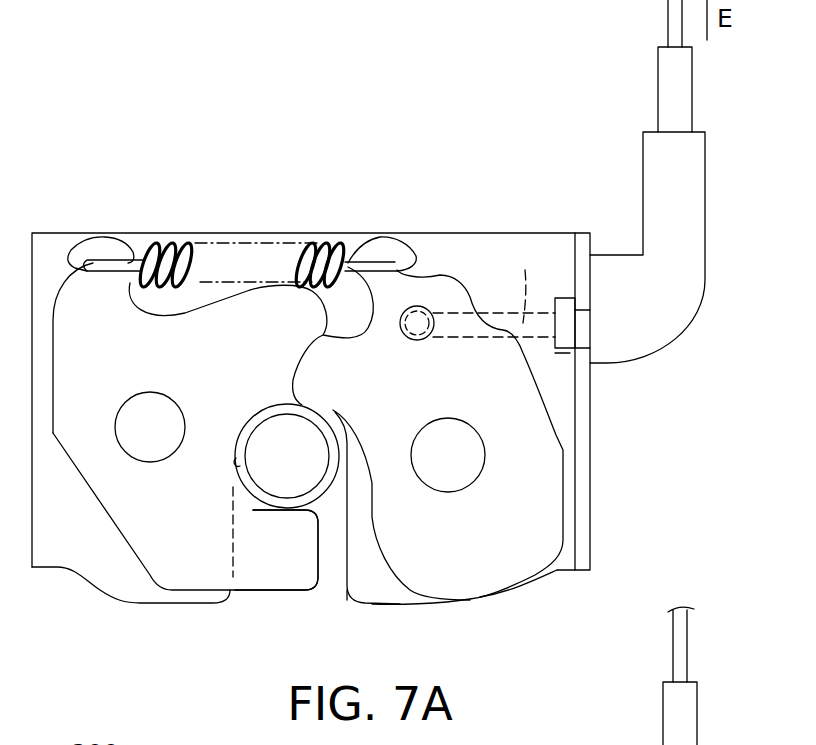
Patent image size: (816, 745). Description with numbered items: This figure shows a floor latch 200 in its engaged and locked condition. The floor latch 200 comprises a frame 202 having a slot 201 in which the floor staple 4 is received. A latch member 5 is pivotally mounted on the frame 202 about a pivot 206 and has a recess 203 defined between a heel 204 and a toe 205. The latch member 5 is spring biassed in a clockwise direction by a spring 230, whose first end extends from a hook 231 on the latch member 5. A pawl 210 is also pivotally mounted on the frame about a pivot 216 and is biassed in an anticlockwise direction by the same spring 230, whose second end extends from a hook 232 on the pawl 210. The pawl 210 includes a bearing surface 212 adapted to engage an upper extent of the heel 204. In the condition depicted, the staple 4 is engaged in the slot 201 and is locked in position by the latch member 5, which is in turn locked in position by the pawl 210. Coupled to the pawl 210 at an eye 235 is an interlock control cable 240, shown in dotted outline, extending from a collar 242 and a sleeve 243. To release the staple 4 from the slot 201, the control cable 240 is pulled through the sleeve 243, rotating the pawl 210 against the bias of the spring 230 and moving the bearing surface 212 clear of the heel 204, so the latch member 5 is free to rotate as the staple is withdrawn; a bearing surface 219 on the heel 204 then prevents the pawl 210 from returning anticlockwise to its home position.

The floor latch 200 is at (116, 132).
The slot 201 is at (333, 588).
The frame 202 is at (477, 231).
The recess 203 is at (235, 468).
The heel 204 is at (238, 389).
The toe 205 is at (306, 562).
The pivot 206 is at (148, 418).
The pawl 210 is at (477, 563).
The bearing surface 212 is at (317, 352).
The pivot 216 is at (463, 450).
The bearing surface 219 is at (317, 303).
The spring 230 is at (173, 237).
The hook 231 is at (85, 248).
The hook 232 is at (375, 250).
The eye 235 is at (427, 337).
The interlock control cable 240 is at (670, 10).
The collar 242 is at (563, 327).
The sleeve 243 is at (675, 298).
The floor staple 4 is at (300, 477).
The latch member 5 is at (182, 533).